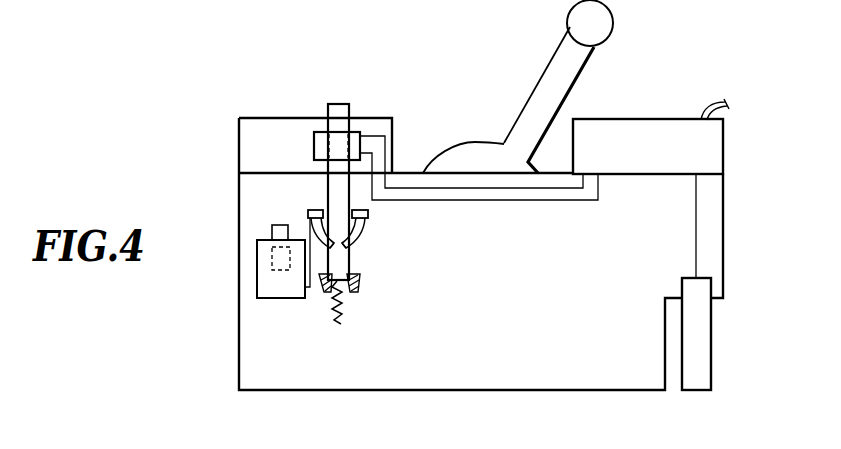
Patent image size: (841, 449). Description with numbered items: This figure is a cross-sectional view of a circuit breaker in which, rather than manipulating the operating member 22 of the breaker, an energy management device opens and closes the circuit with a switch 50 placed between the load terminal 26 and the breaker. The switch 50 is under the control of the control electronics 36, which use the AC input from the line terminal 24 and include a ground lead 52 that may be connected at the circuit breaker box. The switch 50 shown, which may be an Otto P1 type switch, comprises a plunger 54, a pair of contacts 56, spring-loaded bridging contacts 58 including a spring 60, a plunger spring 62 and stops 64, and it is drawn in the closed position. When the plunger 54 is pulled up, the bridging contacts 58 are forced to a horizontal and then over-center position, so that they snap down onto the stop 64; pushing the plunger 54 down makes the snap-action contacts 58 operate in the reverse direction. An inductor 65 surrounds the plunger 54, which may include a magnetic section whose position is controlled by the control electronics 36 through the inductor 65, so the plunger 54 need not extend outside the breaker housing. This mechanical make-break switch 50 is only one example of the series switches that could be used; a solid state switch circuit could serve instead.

The operating member 22 is at (601, 30).
The line terminal 24 is at (700, 330).
The load terminal 26 is at (257, 268).
The control electronics 36 is at (599, 119).
The switch 50 is at (383, 112).
The ground lead 52 is at (718, 100).
The plunger 54 is at (338, 108).
The pair of contacts 56 is at (312, 210).
The spring-loaded bridging contacts 58 is at (356, 242).
The spring 60 is at (360, 226).
The plunger spring 62 is at (341, 324).
The stops 64 is at (362, 282).
The inductor 65 is at (314, 140).